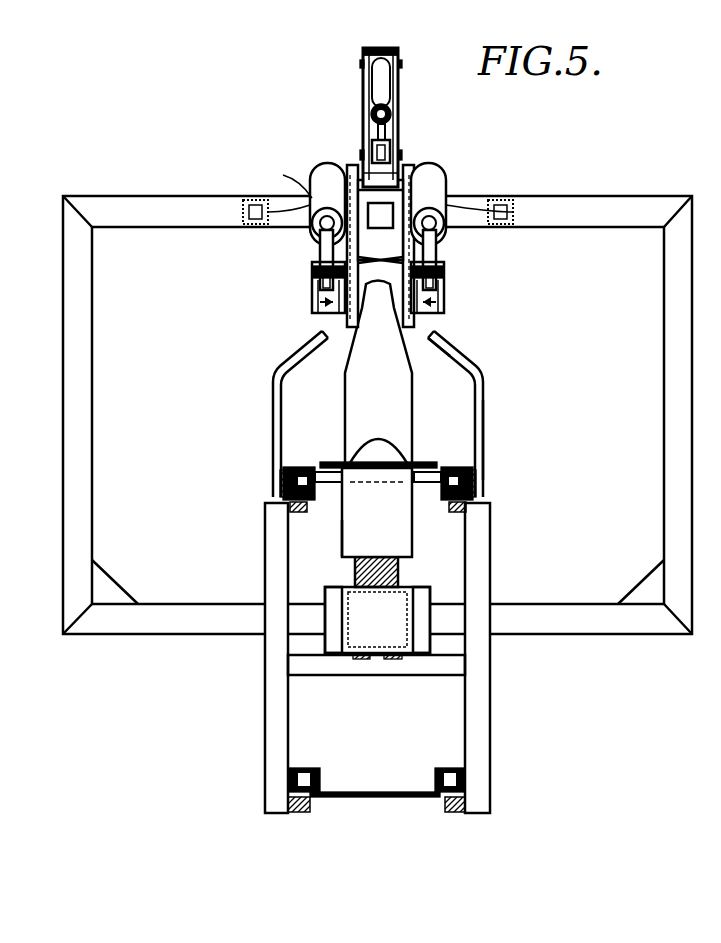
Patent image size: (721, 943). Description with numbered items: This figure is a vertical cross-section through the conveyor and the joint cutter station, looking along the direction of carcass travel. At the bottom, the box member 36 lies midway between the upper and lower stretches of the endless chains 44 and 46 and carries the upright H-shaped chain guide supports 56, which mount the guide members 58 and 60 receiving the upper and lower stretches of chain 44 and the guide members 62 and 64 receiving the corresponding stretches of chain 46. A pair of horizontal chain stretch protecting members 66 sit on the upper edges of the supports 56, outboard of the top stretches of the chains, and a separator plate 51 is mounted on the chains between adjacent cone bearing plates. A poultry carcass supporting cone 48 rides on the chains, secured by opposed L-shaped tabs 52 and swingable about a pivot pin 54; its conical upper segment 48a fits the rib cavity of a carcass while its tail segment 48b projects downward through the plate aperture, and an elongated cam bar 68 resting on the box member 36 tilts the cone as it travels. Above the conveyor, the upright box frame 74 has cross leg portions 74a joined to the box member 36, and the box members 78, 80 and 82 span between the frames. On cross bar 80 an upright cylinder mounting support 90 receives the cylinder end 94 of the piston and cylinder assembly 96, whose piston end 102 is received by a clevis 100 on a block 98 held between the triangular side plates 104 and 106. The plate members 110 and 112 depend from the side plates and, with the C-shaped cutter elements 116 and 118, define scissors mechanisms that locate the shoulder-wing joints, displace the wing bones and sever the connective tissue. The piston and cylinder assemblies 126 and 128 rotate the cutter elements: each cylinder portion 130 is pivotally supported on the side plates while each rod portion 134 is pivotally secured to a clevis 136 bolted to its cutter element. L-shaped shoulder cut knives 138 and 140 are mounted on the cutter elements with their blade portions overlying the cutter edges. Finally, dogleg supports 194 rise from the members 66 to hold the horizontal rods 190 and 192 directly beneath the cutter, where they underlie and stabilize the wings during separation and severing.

The box member 36 is at (376, 658).
The endless chain 44 is at (298, 470).
The endless chain 46 is at (458, 470).
The poultry carcass supporting cone 48 is at (335, 378).
The upper segment of cone 48a is at (393, 402).
The tail segment of cone 48b is at (352, 528).
The separator plate 51 is at (354, 800).
The L-shaped tab 52 is at (320, 464).
The pivot pin 54 is at (345, 480).
The H-shaped chain guide support 56 is at (275, 688).
The chain guide member 58 is at (302, 506).
The chain guide member 60 is at (300, 802).
The chain guide member 62 is at (454, 506).
The chain guide member 64 is at (450, 802).
The chain stretch protecting member 66 is at (477, 483).
The cam bar 68 is at (398, 572).
The front box frame 74 is at (63, 494).
The cross leg portion 74a is at (645, 205).
The box member 78 is at (243, 210).
The box member 80 is at (283, 179).
The box member 82 is at (513, 210).
The cylinder mounting support 90 is at (400, 92).
The cylinder end 94 is at (363, 70).
The piston and cylinder assembly 96 is at (398, 72).
The block 98 is at (400, 165).
The clevis 100 is at (398, 125).
The piston end 102 is at (375, 118).
The side plate 104 is at (352, 166).
The side plate 106 is at (413, 172).
The plate member 110 is at (378, 372).
The plate member 112 is at (448, 348).
The C-shaped cutter element 116 is at (312, 300).
The C-shaped cutter element 118 is at (444, 300).
The piston and cylinder assembly 126 is at (313, 170).
The piston and cylinder assembly 128 is at (445, 172).
The cylinder portion 130 is at (312, 232).
The rod portion 134 is at (305, 240).
The clevis 136 is at (320, 302).
The L-shaped transverse shoulder cut knife 138 is at (320, 268).
The L-shaped transverse shoulder cut knife 140 is at (437, 266).
The horizontal rod 190 is at (323, 333).
The horizontal rod 192 is at (434, 334).
The support 194 is at (483, 392).